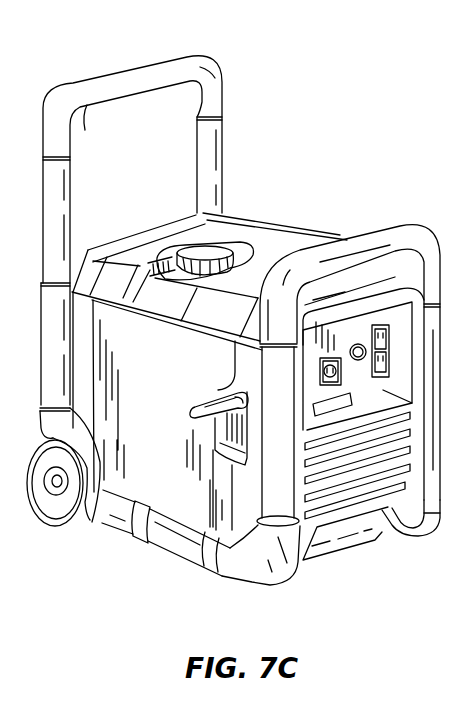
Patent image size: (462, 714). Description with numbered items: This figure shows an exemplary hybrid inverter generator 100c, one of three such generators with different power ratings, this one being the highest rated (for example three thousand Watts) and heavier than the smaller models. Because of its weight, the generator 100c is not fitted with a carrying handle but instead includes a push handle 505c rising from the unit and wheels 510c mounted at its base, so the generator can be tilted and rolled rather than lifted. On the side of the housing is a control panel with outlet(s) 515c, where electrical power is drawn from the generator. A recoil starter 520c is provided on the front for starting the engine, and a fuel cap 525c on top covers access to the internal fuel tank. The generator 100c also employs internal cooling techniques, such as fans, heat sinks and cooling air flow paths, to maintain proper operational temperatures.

The hybrid inverter generator 100c is at (345, 100).
The push handle 505c is at (214, 93).
The fuel cap 525c is at (215, 256).
The recoil starter 520c is at (218, 417).
The control panel with outlet(s) 515c is at (368, 370).
The wheels 510c is at (62, 505).